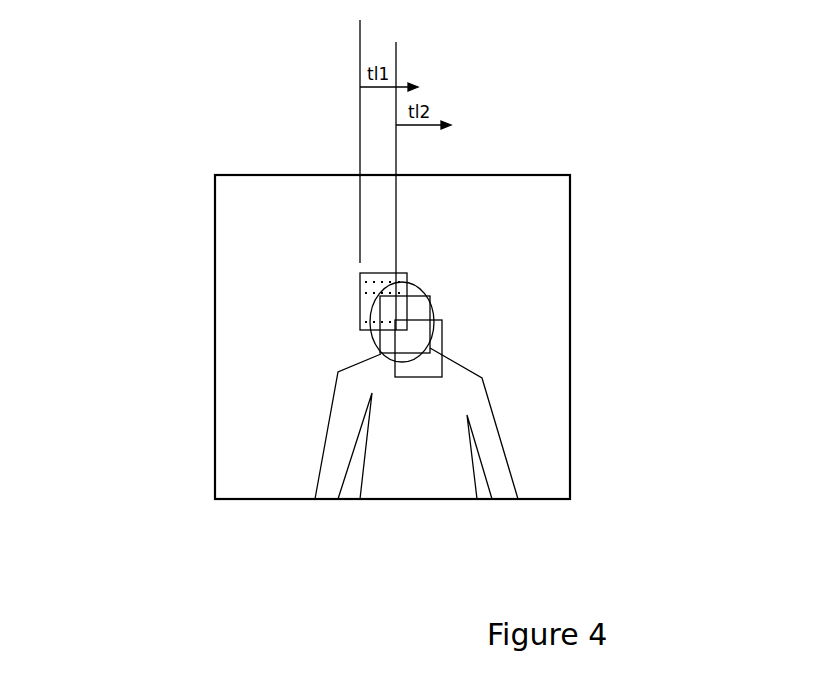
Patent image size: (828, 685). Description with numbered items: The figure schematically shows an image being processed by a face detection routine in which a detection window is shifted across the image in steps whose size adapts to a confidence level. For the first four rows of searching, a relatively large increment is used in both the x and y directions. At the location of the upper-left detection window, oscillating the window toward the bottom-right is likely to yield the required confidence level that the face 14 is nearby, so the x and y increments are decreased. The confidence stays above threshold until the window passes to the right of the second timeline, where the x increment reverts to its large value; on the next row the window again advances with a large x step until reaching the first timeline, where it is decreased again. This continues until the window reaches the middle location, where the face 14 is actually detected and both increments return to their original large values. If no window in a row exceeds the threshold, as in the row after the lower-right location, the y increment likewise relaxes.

The face 14 is at (433, 311).